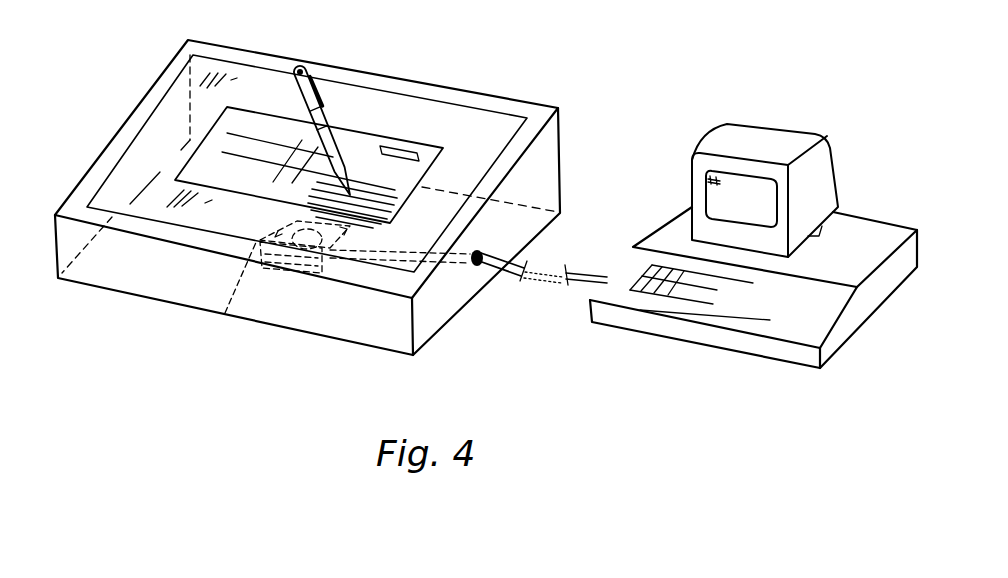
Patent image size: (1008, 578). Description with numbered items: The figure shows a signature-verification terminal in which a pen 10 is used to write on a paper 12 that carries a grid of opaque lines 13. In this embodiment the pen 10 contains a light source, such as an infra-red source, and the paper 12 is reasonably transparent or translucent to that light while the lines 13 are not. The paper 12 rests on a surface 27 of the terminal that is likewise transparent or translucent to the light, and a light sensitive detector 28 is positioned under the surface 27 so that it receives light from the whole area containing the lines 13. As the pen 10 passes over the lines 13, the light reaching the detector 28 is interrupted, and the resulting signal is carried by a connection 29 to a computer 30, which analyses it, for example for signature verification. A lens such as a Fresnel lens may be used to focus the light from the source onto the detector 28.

The pen 10 is at (305, 100).
The paper 12 is at (365, 147).
The grid of opaque lines 13 is at (380, 197).
The surface 27 is at (136, 170).
The light sensitive detector 28 is at (225, 313).
The connection 29 is at (578, 272).
The computer 30 is at (672, 362).